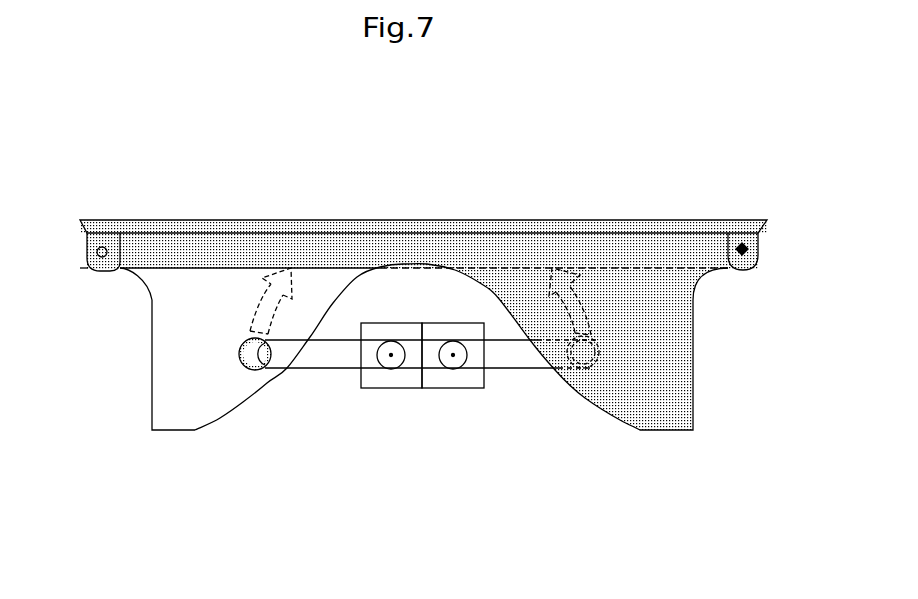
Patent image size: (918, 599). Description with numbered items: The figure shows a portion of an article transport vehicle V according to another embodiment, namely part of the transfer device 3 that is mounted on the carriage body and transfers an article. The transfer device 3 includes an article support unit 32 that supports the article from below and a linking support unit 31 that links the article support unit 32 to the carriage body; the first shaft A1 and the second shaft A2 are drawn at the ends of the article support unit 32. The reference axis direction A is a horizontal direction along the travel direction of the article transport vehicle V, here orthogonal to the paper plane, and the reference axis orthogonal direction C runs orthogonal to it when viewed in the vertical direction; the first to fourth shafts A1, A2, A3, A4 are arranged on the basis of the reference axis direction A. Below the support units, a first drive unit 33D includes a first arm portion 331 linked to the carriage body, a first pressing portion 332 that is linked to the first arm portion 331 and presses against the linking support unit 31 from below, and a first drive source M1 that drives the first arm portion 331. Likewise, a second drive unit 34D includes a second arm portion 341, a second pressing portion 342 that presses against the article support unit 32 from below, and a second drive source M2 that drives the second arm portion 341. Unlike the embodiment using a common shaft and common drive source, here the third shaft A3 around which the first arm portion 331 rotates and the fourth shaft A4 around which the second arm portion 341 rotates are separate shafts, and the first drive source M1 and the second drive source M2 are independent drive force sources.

The transfer device 3 is at (408, 277).
The linking support unit 31 is at (130, 320).
The article support unit 32 is at (437, 204).
The first arm portion 331 is at (522, 369).
The first pressing portion 332 is at (603, 370).
The second arm portion 341 is at (320, 369).
The second pressing portion 342 is at (248, 366).
The first drive unit 33D is at (440, 395).
The second drive unit 34D is at (397, 395).
The first drive source M1 is at (437, 323).
The second drive source M2 is at (392, 323).
The first shaft A1 is at (103, 222).
The second shaft A2 is at (758, 252).
The third shaft A3 is at (453, 356).
The fourth shaft A4 is at (391, 356).
The article transport vehicle V is at (183, 150).
The reference axis direction A is at (317, 557).
The reference axis orthogonal direction C is at (487, 552).